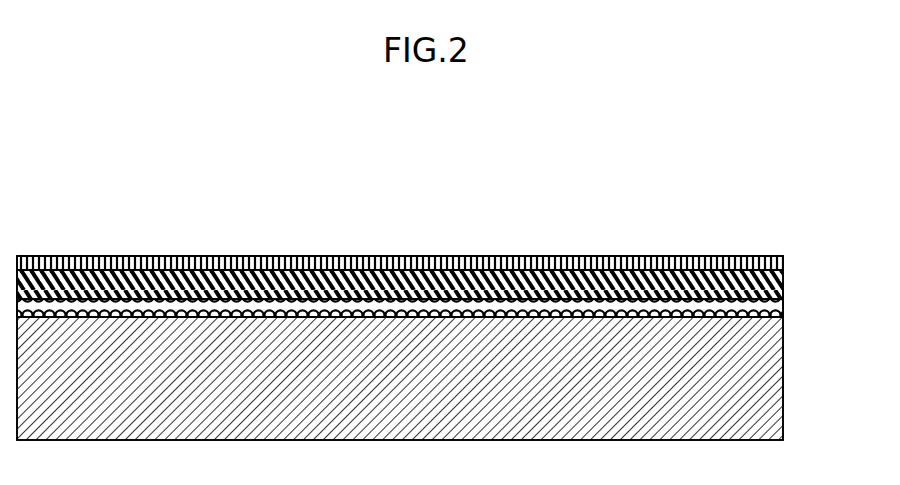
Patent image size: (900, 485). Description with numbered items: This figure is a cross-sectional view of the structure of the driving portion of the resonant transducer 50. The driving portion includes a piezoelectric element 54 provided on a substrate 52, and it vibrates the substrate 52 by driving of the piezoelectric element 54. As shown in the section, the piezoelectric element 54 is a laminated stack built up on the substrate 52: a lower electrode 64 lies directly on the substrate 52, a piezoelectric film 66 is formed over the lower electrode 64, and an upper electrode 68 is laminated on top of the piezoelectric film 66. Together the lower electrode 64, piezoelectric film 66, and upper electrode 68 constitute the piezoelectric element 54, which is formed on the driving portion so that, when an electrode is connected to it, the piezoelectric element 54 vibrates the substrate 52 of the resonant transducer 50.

The resonant transducer 50 is at (647, 200).
The substrate 52 is at (783, 380).
The piezoelectric element 54 is at (848, 240).
The lower electrode 64 is at (783, 310).
The piezoelectric film 66 is at (783, 287).
The upper electrode 68 is at (783, 264).